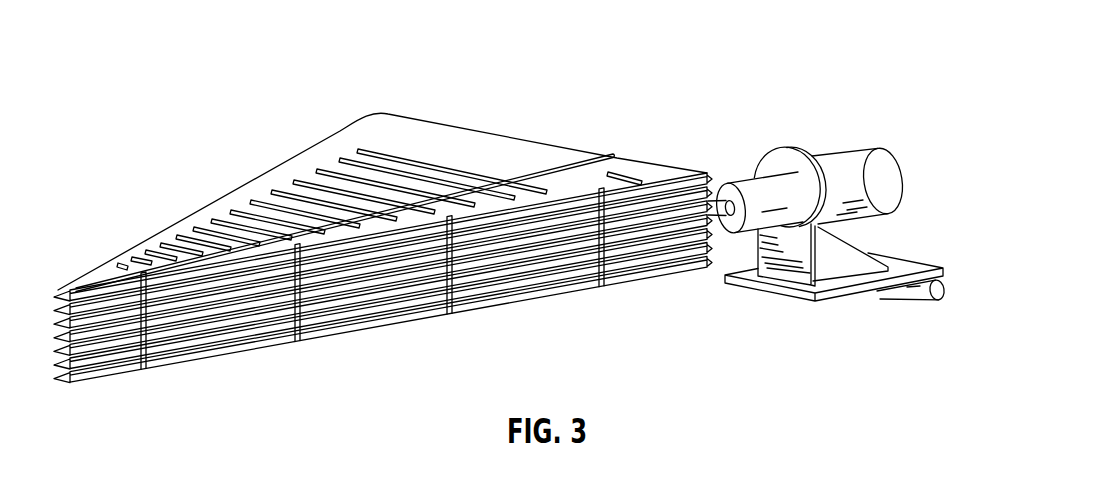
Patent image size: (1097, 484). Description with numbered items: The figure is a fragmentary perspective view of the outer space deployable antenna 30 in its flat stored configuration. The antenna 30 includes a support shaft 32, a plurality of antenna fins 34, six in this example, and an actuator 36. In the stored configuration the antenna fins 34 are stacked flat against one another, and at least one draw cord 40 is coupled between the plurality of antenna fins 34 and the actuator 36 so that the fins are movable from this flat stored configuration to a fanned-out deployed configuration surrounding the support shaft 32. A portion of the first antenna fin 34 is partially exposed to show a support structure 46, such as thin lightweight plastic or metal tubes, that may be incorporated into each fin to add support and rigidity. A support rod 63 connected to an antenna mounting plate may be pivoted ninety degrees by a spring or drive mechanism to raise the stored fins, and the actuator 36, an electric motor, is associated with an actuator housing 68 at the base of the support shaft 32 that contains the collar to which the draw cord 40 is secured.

The outer space deployable antenna 30 is at (640, 58).
The support shaft 32 is at (716, 222).
The antenna fins 34 is at (212, 222).
The actuator 36 is at (842, 148).
The draw cord 40 is at (601, 282).
The support structure 46 is at (613, 157).
The support rod 63 is at (938, 293).
The actuator housing 68 is at (743, 183).